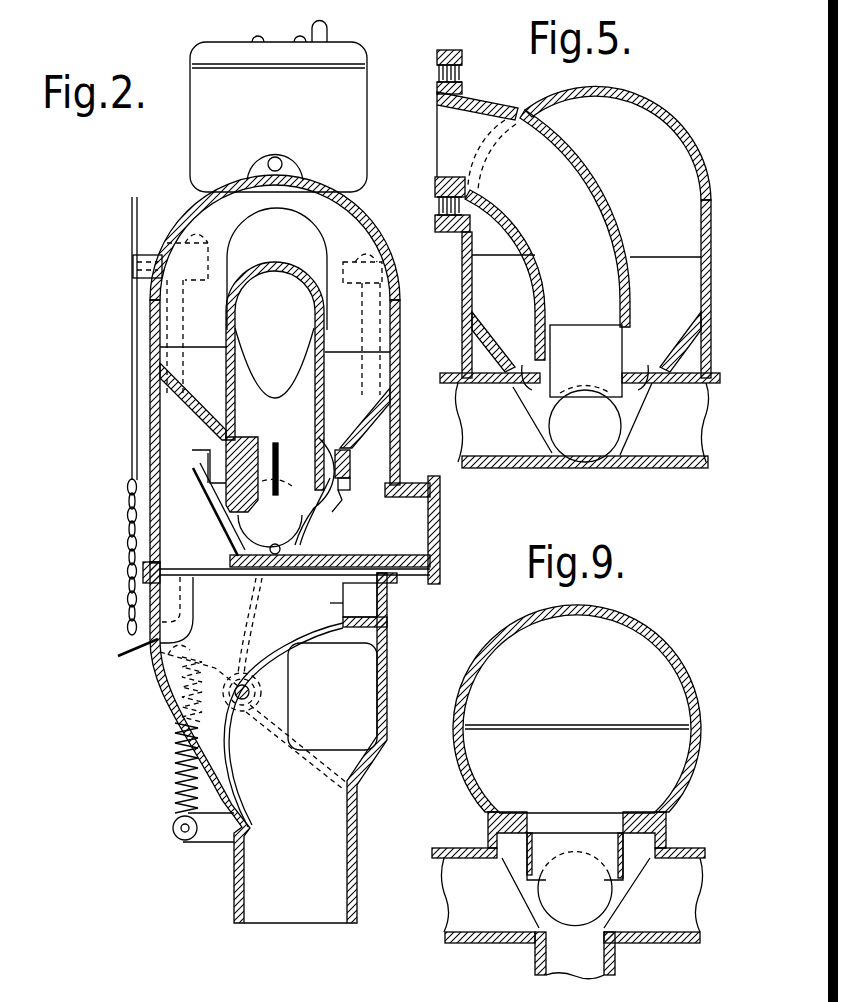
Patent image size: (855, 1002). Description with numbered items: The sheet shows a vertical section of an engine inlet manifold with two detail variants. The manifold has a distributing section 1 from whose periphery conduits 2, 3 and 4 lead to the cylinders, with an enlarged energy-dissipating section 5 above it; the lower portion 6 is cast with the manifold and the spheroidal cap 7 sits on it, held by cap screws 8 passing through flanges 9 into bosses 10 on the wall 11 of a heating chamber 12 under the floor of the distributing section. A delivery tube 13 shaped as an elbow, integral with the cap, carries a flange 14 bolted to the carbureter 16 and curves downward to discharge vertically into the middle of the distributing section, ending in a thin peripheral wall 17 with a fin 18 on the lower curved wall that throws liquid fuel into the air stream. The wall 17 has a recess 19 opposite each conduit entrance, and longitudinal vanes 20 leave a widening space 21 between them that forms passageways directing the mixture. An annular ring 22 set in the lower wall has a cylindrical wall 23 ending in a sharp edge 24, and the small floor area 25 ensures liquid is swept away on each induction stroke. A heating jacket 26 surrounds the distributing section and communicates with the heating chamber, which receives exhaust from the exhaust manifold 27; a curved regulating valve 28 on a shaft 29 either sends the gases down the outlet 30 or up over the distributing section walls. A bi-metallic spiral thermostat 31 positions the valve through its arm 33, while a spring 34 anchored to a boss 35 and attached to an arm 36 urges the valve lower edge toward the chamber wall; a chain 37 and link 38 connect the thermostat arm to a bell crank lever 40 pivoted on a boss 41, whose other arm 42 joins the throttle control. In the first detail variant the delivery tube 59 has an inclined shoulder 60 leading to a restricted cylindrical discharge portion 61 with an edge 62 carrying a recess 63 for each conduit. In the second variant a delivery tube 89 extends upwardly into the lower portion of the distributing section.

In FIG. 2, the distributing section 1 is at (232, 528).
In FIG. 5, the distributing section 1 is at (633, 413).
In FIG. 9, the distributing section 1 is at (616, 892).
In FIG. 5, the conduit 2 is at (690, 448).
In FIG. 9, the conduit 2 is at (687, 925).
In FIG. 2, the conduit 3 is at (303, 537).
In FIG. 5, the conduit 3 is at (522, 446).
In FIG. 9, the conduit 3 is at (490, 925).
In FIG. 2, the conduit 4 is at (430, 535).
In FIG. 5, the conduit 4 is at (586, 448).
In FIG. 2, the energy-dissipating section 5 is at (389, 357).
In FIG. 9, the energy-dissipating section 5 is at (676, 790).
In FIG. 2, the lower portion of the energy-dissipating section 6 is at (389, 402).
In FIG. 2, the spheroidal cap 7 is at (362, 223).
In FIG. 5, the spheroidal cap 7 is at (586, 232).
In FIG. 9, the spheroidal cap 7 is at (655, 645).
In FIG. 2, the cap screws 8 is at (380, 258).
In FIG. 2, the flanges 9 is at (383, 272).
In FIG. 2, the bosses 10 is at (193, 600).
In FIG. 2, the wall of the heating chamber 11 is at (390, 658).
In FIG. 2, the heating chamber 12 is at (330, 603).
In FIG. 2, the delivery tube 13 is at (318, 384).
In FIG. 2, the flange 14 is at (292, 169).
In FIG. 2, the carbureter 16 is at (190, 137).
In FIG. 2, the thin peripheral wall 17 is at (323, 508).
In FIG. 9, the thin peripheral wall 17 is at (618, 888).
In FIG. 2, the fin 18 is at (269, 391).
In FIG. 2, the recess 19 is at (270, 513).
In FIG. 9, the recess 19 is at (578, 867).
In FIG. 2, the longitudinal vanes 20 is at (245, 452).
In FIG. 2, the space between vanes 21 is at (279, 448).
In FIG. 2, the annular ring 22 is at (344, 448).
In FIG. 9, the annular ring 22 is at (640, 812).
In FIG. 2, the cylindrical wall 23 is at (335, 495).
In FIG. 9, the cylindrical wall 23 is at (629, 854).
In FIG. 2, the sharp edge 24 is at (331, 512).
In FIG. 2, the floor area 25 is at (283, 556).
In FIG. 2, the heating jacket 26 is at (380, 452).
In FIG. 5, the heating jacket 26 is at (685, 335).
In FIG. 2, the exhaust manifold 27 is at (365, 676).
In FIG. 2, the regulating valve 28 is at (233, 768).
In FIG. 2, the shaft 29 is at (255, 693).
In FIG. 2, the outlet 30 is at (323, 913).
In FIG. 2, the thermostat 31 is at (265, 678).
In FIG. 2, the arm of the thermostat 33 is at (141, 648).
In FIG. 2, the spring 34 is at (175, 753).
In FIG. 2, the boss 35 is at (213, 835).
In FIG. 2, the arm 36 is at (217, 662).
In FIG. 2, the chain 37 is at (128, 563).
In FIG. 2, the link 38 is at (132, 407).
In FIG. 2, the bell crank lever 40 is at (148, 257).
In FIG. 2, the boss 41 is at (196, 262).
In FIG. 2, the arm of the bell crank lever 42 is at (131, 226).
In FIG. 5, the delivery tube 59 is at (567, 152).
In FIG. 5, the inclined shoulder 60 is at (622, 322).
In FIG. 5, the restricted cylindrical discharge portion 61 is at (618, 368).
In FIG. 5, the edge 62 is at (600, 403).
In FIG. 5, the recess 63 is at (582, 402).
In FIG. 9, the delivery tube 89 is at (603, 960).